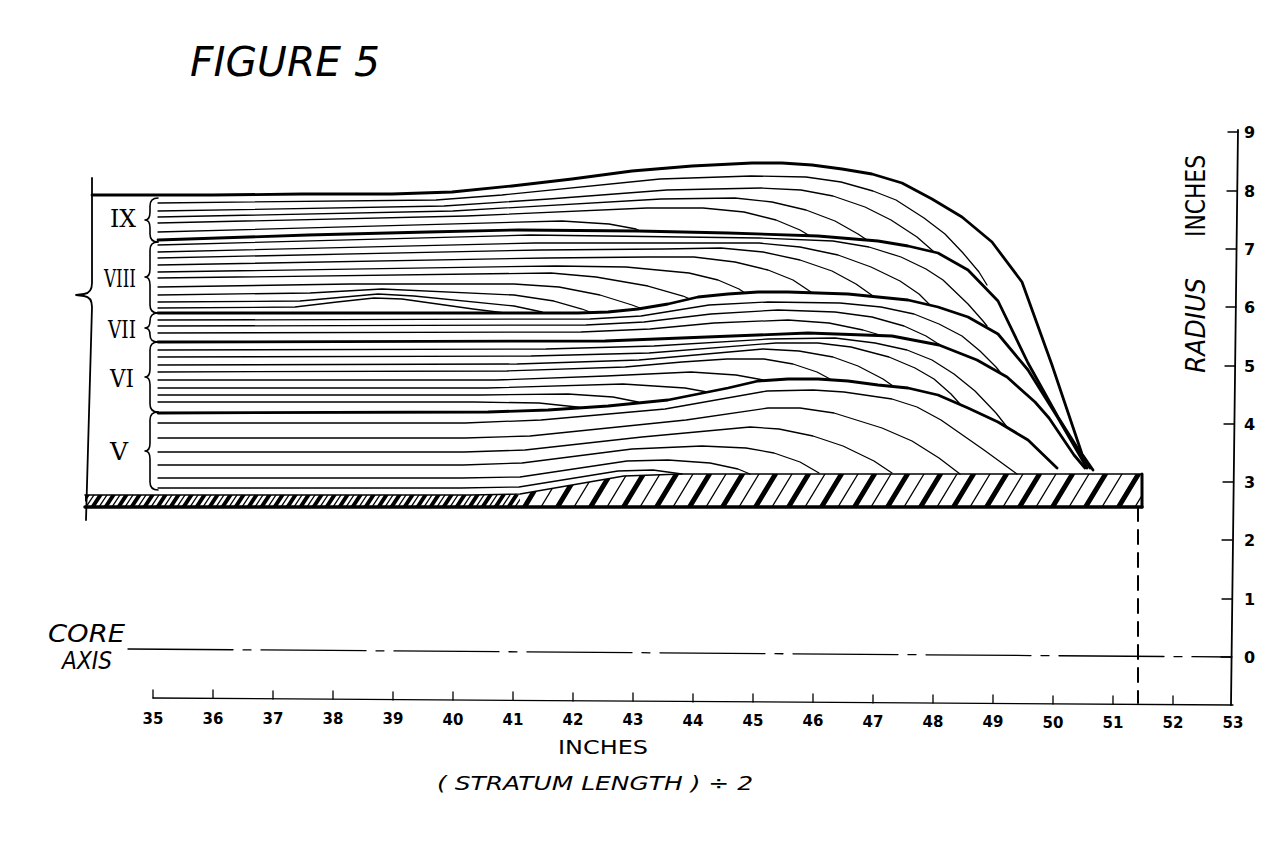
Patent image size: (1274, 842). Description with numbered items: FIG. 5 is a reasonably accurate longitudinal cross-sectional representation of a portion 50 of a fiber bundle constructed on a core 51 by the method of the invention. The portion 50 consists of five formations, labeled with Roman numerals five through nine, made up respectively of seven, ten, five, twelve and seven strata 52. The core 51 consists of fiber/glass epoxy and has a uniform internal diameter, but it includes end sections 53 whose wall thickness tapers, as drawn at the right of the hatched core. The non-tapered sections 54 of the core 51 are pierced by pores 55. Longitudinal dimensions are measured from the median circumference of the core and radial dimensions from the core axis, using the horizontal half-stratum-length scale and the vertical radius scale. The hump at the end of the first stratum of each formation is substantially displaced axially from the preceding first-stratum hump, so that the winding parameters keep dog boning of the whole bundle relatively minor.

The portion of a fiber bundle 50 is at (608, 287).
The core 51 is at (1150, 484).
The strata 52 is at (1020, 325).
The end sections 53 is at (648, 501).
The non-tapered sections 54 is at (404, 507).
The pores 55 is at (300, 500).